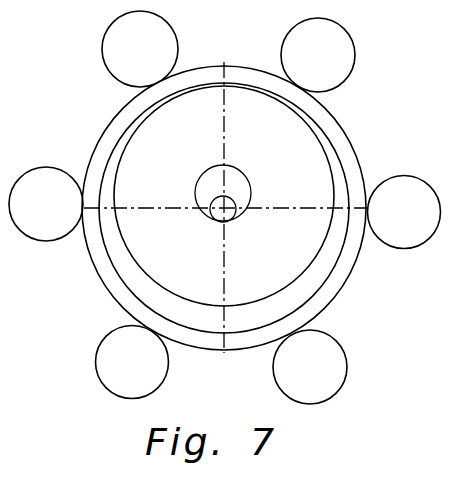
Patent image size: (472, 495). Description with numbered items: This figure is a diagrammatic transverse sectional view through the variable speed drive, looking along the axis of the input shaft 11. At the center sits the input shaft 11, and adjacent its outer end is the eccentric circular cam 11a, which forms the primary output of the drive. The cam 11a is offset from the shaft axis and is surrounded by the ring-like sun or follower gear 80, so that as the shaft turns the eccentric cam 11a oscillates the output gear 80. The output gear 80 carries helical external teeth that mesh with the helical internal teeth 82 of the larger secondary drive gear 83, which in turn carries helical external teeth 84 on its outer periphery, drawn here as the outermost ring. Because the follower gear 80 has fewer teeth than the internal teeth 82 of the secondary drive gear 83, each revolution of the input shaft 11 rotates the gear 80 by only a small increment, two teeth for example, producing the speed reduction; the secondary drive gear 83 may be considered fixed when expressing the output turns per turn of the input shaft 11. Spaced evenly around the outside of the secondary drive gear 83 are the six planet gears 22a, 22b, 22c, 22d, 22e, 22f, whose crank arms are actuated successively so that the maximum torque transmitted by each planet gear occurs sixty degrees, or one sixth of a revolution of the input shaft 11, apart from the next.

The ring-like sun or follower gear 80 is at (285, 150).
The helical internal teeth 82 is at (308, 298).
The secondary drive gear 83 is at (351, 157).
The helical external teeth 84 is at (334, 298).
The input shaft 11 is at (236, 203).
The eccentric circular cam 11a is at (201, 176).
The planet gear 22a is at (309, 65).
The planet gear 22b is at (393, 222).
The planet gear 22c is at (299, 377).
The planet gear 22d is at (122, 372).
The planet gear 22e is at (35, 212).
The planet gear 22f is at (130, 58).